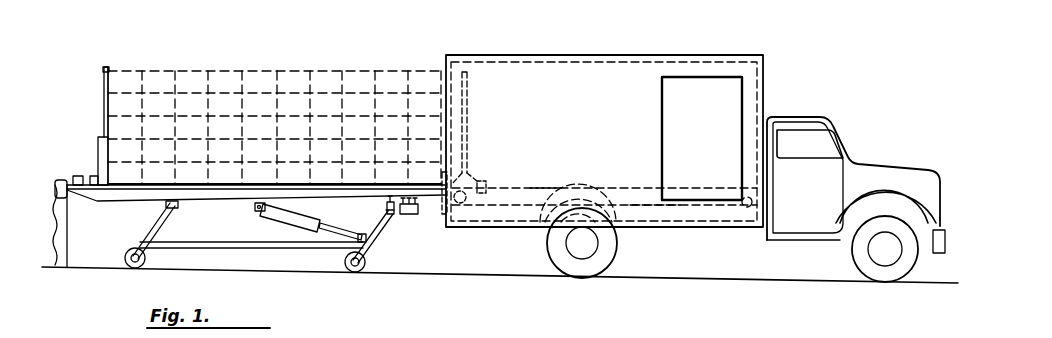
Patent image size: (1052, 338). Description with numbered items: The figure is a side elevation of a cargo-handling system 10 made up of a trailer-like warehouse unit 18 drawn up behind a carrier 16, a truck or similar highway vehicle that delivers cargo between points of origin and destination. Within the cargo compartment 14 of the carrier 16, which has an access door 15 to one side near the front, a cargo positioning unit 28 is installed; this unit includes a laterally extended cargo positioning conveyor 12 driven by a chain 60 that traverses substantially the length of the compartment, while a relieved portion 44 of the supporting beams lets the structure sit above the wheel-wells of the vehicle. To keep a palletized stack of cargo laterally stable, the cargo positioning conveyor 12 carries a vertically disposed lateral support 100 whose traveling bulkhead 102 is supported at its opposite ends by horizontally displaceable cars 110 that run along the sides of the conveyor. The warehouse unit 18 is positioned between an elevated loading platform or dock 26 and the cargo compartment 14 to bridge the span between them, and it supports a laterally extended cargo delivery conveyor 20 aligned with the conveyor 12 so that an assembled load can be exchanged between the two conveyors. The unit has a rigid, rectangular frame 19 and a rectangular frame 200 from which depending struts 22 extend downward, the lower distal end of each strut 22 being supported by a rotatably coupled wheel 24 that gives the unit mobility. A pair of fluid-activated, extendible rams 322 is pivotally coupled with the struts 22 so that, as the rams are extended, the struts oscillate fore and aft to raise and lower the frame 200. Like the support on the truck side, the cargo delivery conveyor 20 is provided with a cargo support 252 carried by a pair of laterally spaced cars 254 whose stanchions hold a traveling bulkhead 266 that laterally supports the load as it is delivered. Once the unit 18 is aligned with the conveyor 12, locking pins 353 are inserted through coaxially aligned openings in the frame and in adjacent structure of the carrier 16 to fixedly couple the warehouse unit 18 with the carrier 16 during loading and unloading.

The cargo-handling system 10 is at (695, 165).
The cargo positioning conveyor 12 is at (662, 153).
The cargo compartment 14 is at (615, 70).
The access door 15 is at (733, 120).
The carrier 16 is at (865, 170).
The warehouse unit 18 is at (254, 252).
The rigid rectangular frame 19 is at (198, 196).
The cargo delivery conveyor 20 is at (265, 176).
The strut 22 is at (150, 236).
The wheel 24 is at (124, 268).
The loading platform or dock 26 is at (60, 180).
The cargo positioning unit 28 is at (543, 180).
The relieved portion 44 is at (566, 196).
The chain 60 is at (652, 186).
The lateral support 100 is at (470, 110).
The traveling bulkhead 102 is at (468, 130).
The car 110 is at (477, 177).
The rectangular frame 200 is at (233, 211).
The cargo support 252 is at (106, 90).
The car 254 is at (103, 137).
The traveling bulkhead 266 is at (104, 75).
The fluid-activated extendible ram 322 is at (297, 230).
The locking pin 353 is at (438, 208).